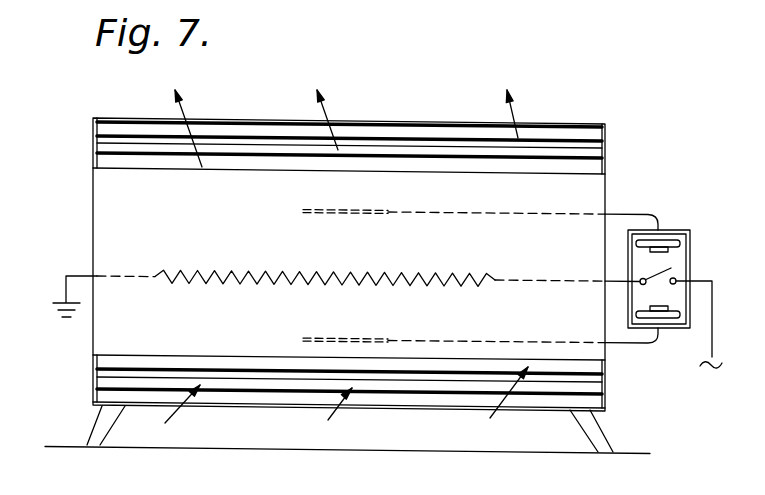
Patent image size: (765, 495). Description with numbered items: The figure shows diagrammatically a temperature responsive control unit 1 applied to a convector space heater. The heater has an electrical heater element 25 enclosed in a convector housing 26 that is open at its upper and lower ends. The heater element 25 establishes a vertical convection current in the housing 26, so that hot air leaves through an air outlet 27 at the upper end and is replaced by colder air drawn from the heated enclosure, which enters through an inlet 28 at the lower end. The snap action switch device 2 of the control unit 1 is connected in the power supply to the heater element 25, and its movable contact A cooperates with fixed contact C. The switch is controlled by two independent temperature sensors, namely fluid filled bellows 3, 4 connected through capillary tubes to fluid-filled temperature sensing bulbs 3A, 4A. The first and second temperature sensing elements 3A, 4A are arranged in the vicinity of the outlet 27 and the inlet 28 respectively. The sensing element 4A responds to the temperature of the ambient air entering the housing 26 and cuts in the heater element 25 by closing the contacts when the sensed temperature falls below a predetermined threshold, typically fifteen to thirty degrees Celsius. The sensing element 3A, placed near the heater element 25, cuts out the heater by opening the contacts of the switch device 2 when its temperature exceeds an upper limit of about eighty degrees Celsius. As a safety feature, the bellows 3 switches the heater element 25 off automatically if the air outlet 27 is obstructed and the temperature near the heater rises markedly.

The temperature responsive control unit 1 is at (690, 228).
The snap action switch device 2 is at (673, 272).
The fluid filled bellows 3 is at (668, 229).
The fluid filled bellows 4 is at (669, 331).
The temperature sensing bulb 3A is at (323, 209).
The temperature sensing bulb 4A is at (336, 337).
The electrical heater element 25 is at (316, 271).
The convector housing 26 is at (100, 228).
The air outlet 27 is at (605, 137).
The inlet 28 is at (593, 388).